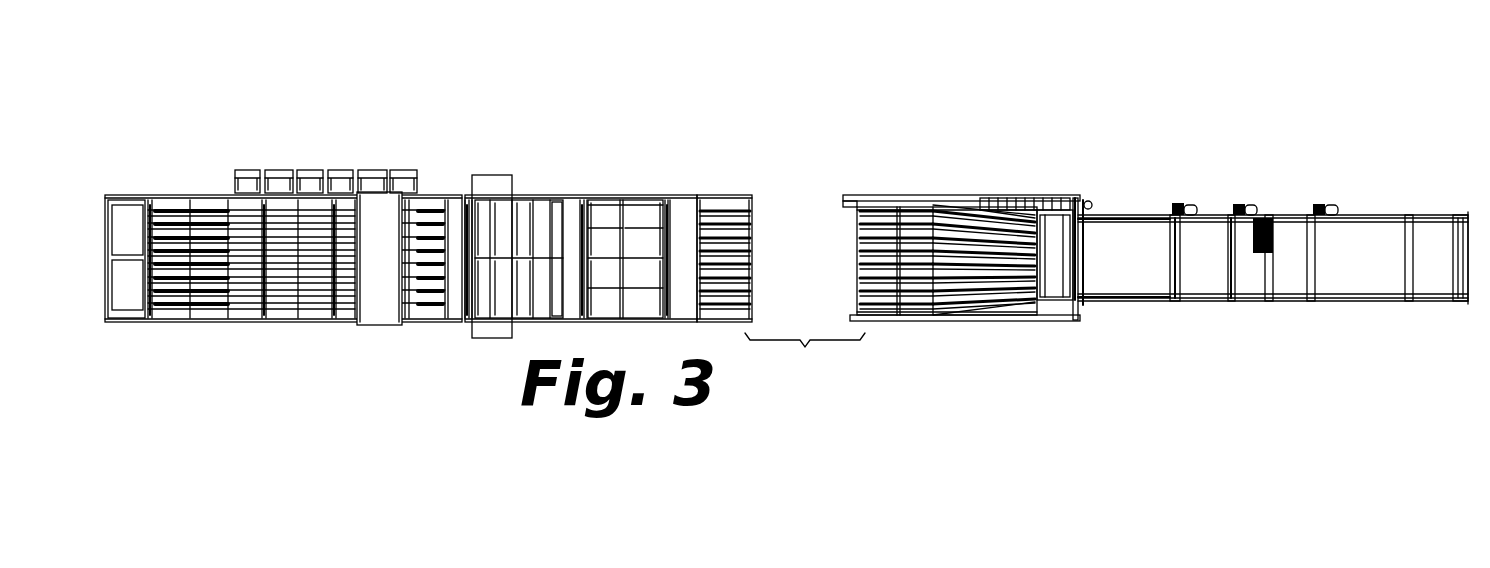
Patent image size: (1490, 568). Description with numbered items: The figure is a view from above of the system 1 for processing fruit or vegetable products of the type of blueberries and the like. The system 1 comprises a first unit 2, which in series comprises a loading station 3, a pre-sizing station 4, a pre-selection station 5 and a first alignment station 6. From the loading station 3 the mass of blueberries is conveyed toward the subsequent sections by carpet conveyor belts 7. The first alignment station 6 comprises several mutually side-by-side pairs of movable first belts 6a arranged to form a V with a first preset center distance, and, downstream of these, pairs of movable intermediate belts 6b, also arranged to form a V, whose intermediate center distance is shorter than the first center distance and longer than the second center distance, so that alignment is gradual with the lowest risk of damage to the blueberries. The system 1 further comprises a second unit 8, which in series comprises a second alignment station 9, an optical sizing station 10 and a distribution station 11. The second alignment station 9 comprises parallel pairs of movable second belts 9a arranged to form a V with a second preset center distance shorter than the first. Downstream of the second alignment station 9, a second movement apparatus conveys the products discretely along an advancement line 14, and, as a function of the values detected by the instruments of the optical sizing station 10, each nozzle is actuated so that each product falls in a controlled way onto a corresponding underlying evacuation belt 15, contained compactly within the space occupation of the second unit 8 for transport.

The system 1 is at (930, 115).
The first unit 2 is at (1252, 195).
The loading station 3 is at (1388, 210).
The pre-sizing station 4 is at (1208, 212).
The pre-selection station 5 is at (1140, 210).
The first alignment station 6 is at (1003, 193).
The first belts 6a is at (980, 215).
The intermediate belts 6b is at (882, 215).
The carpet conveyor belts 7 is at (1127, 275).
The second unit 8 is at (377, 145).
The second alignment station 9 is at (730, 190).
The second belts 9a is at (752, 205).
The optical sizing station 10 is at (570, 190).
The distribution station 11 is at (287, 150).
The advancement line 14 is at (218, 303).
The evacuation belt 15 is at (275, 175).